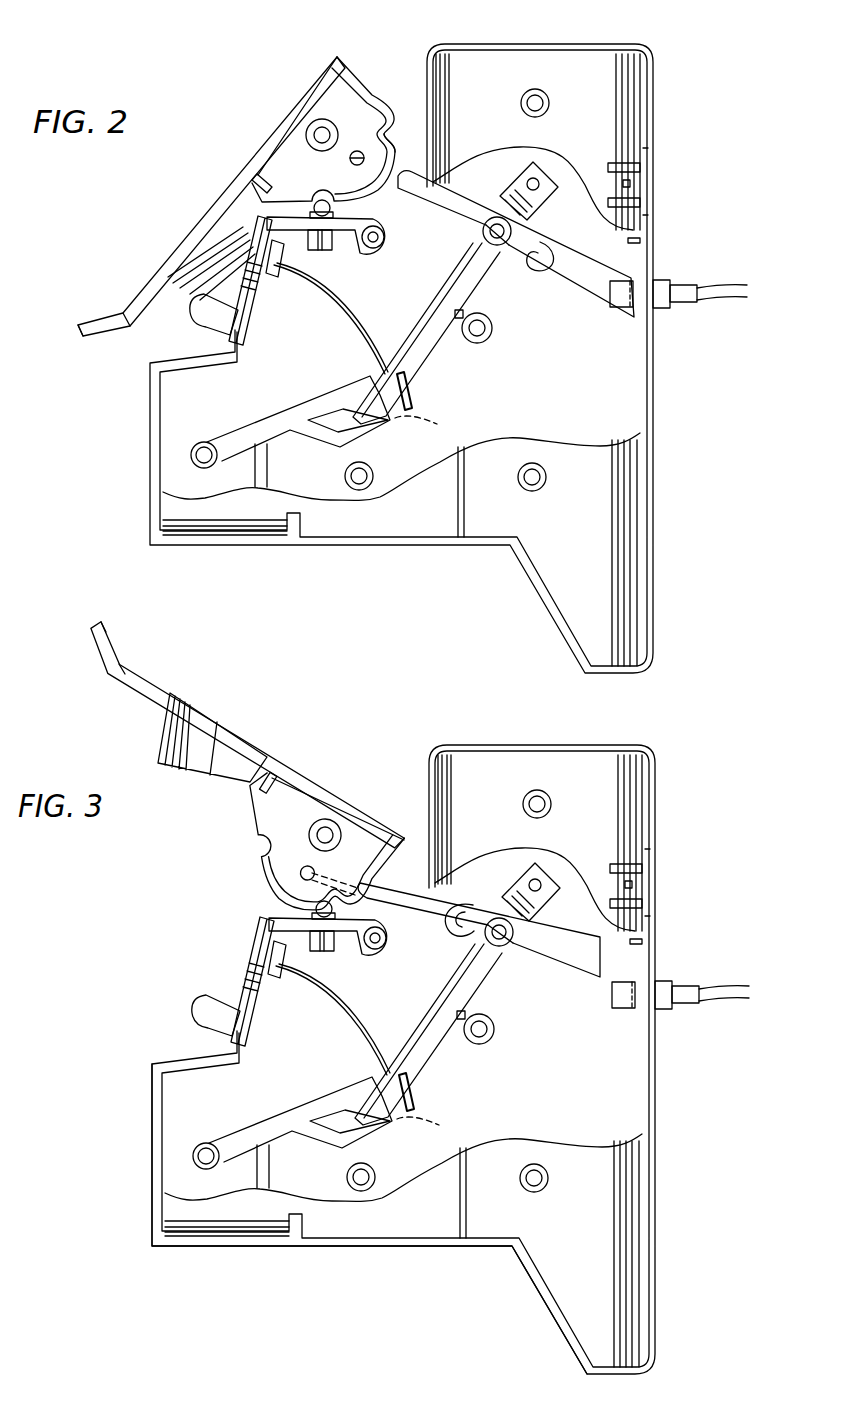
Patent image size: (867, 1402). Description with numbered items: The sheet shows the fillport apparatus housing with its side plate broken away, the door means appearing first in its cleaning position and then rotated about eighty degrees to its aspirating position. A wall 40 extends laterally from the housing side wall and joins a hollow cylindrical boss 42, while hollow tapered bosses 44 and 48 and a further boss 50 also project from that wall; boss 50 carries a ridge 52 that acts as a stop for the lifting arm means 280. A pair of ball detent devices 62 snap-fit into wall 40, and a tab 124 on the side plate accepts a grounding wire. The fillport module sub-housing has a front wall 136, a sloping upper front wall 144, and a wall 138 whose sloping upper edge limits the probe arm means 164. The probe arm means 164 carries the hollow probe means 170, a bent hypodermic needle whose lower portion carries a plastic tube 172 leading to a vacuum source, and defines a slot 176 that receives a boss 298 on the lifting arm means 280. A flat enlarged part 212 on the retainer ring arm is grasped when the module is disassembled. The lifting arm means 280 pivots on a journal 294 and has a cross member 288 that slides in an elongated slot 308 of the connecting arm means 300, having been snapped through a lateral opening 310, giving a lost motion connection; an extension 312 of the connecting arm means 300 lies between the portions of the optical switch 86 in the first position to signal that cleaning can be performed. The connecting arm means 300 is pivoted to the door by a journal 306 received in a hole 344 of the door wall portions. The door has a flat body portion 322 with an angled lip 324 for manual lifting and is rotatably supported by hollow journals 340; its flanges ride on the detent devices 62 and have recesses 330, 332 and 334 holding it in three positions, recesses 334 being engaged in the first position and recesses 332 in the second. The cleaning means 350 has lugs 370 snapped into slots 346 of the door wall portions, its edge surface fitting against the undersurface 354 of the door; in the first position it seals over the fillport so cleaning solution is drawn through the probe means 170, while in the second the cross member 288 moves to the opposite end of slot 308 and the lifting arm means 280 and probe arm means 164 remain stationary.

In FIG. 2, the wall 40 is at (302, 248).
In FIG. 2, the hollow cylindrical boss 42 is at (375, 255).
In FIG. 3, the hollow cylindrical boss 42 is at (371, 957).
In FIG. 2, the hollow tapered boss 44 is at (538, 92).
In FIG. 3, the hollow tapered boss 44 is at (538, 797).
In FIG. 2, the hollow tapered boss 48 is at (370, 466).
In FIG. 3, the hollow tapered boss 48 is at (382, 1168).
In FIG. 2, the boss 50 is at (483, 343).
In FIG. 3, the boss 50 is at (486, 1040).
In FIG. 2, the ridge portion 52 is at (456, 320).
In FIG. 3, the ridge portion 52 is at (466, 1014).
In FIG. 2, the ball detent device 62 is at (331, 208).
In FIG. 3, the ball detent device 62 is at (318, 908).
In FIG. 2, the optical switch 86 is at (700, 276).
In FIG. 3, the optical switch 86 is at (713, 978).
In FIG. 2, the tab 124 is at (647, 182).
In FIG. 3, the tab 124 is at (649, 877).
In FIG. 3, the front wall 136 is at (155, 1155).
In FIG. 2, the wall 138 is at (262, 472).
In FIG. 3, the wall 138 is at (264, 1177).
In FIG. 3, the sloping upper front wall 144 is at (271, 945).
In FIG. 2, the probe arm means 164 is at (273, 418).
In FIG. 3, the probe arm means 164 is at (278, 1117).
In FIG. 2, the probe means 170 is at (342, 308).
In FIG. 3, the probe means 170 is at (311, 985).
In FIG. 2, the plastic tube 172 is at (413, 402).
In FIG. 3, the plastic tube 172 is at (413, 1090).
In FIG. 2, the slot 176 is at (335, 407).
In FIG. 3, the slot 176 is at (342, 1104).
In FIG. 2, the flat enlarged part 212 is at (202, 320).
In FIG. 3, the flat enlarged part 212 is at (197, 1013).
In FIG. 2, the lifting arm means 280 is at (421, 306).
In FIG. 3, the lifting arm means 280 is at (428, 1002).
In FIG. 2, the cross member 288 is at (512, 235).
In FIG. 3, the cross member 288 is at (512, 942).
In FIG. 2, the journal 294 is at (537, 180).
In FIG. 3, the journal 294 is at (539, 888).
In FIG. 2, the boss 298 is at (405, 422).
In FIG. 3, the boss 298 is at (420, 1118).
In FIG. 2, the connecting arm means 300 is at (458, 236).
In FIG. 3, the connecting arm means 300 is at (406, 926).
In FIG. 2, the journal 306 is at (361, 151).
In FIG. 2, the elongated slot 308 is at (549, 268).
In FIG. 3, the elongated slot 308 is at (473, 905).
In FIG. 2, the opening 310 is at (520, 262).
In FIG. 3, the opening 310 is at (497, 953).
In FIG. 2, the extension 312 is at (591, 290).
In FIG. 2, the flat body portion 322 is at (211, 196).
In FIG. 3, the flat body portion 322 is at (247, 734).
In FIG. 2, the angled lip 324 is at (97, 325).
In FIG. 3, the angled lip 324 is at (113, 632).
In FIG. 2, the recess 330 is at (393, 110).
In FIG. 2, the recess 332 is at (390, 147).
In FIG. 3, the recess 334 is at (330, 835).
In FIG. 2, the hollow journal 340 is at (314, 126).
In FIG. 3, the hollow journal 340 is at (325, 835).
In FIG. 2, the hole 344 is at (349, 160).
In FIG. 2, the slot 346 is at (277, 132).
In FIG. 3, the slot 346 is at (287, 777).
In FIG. 2, the cleaning means 350 is at (216, 241).
In FIG. 3, the cleaning means 350 is at (163, 743).
In FIG. 2, the undersurface of the door means 354 is at (166, 286).
In FIG. 3, the undersurface of the door means 354 is at (130, 678).
In FIG. 2, the lug 370 is at (250, 195).
In FIG. 3, the lug 370 is at (268, 783).